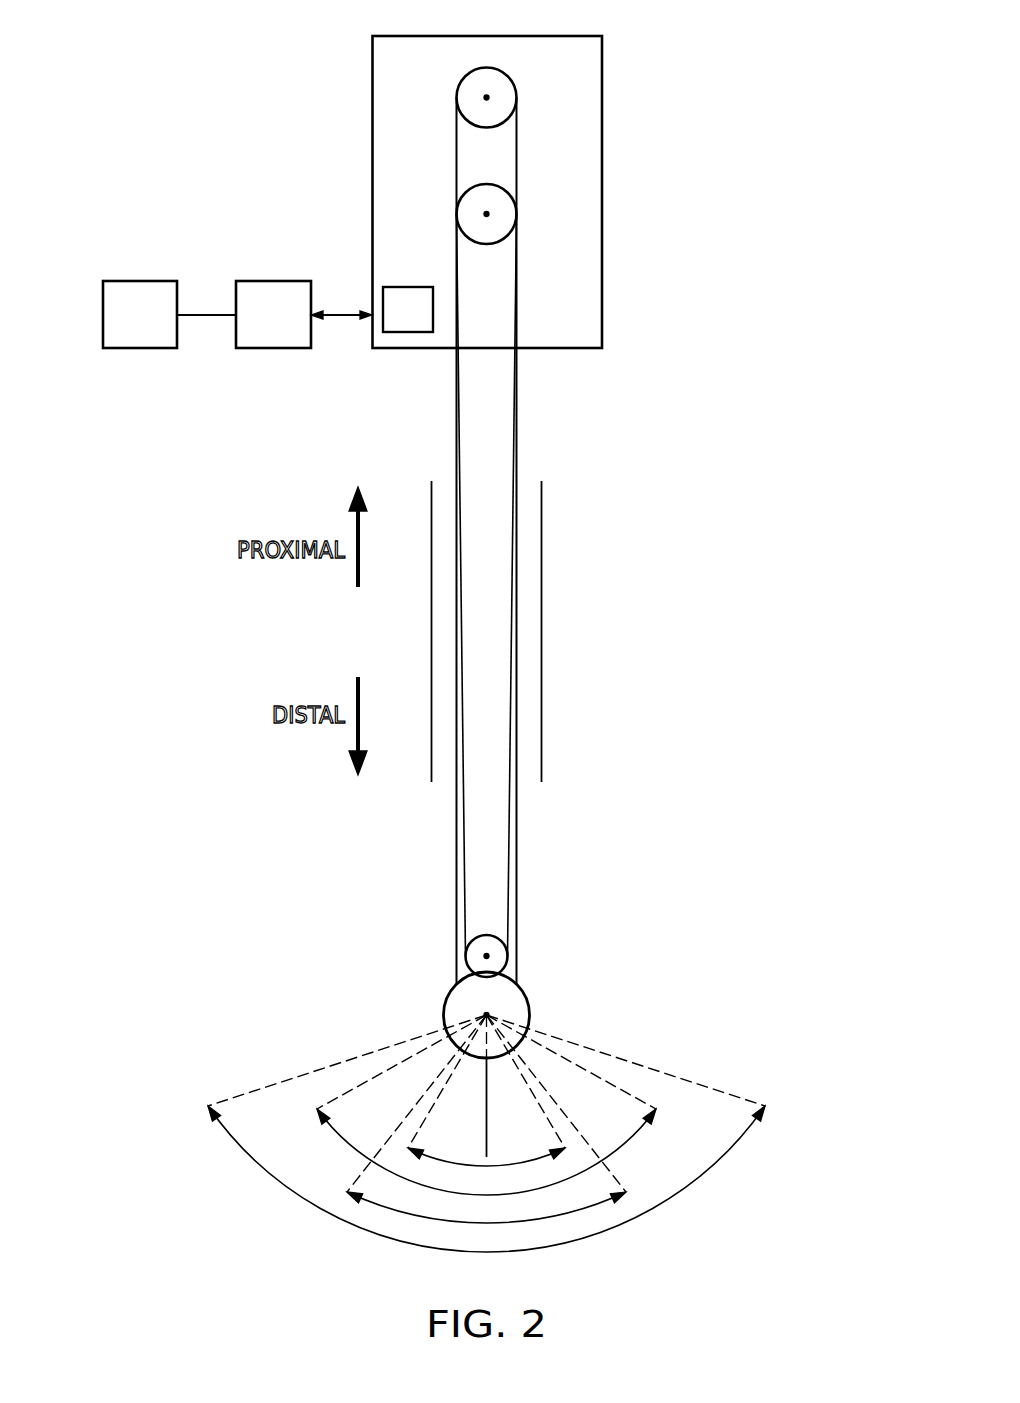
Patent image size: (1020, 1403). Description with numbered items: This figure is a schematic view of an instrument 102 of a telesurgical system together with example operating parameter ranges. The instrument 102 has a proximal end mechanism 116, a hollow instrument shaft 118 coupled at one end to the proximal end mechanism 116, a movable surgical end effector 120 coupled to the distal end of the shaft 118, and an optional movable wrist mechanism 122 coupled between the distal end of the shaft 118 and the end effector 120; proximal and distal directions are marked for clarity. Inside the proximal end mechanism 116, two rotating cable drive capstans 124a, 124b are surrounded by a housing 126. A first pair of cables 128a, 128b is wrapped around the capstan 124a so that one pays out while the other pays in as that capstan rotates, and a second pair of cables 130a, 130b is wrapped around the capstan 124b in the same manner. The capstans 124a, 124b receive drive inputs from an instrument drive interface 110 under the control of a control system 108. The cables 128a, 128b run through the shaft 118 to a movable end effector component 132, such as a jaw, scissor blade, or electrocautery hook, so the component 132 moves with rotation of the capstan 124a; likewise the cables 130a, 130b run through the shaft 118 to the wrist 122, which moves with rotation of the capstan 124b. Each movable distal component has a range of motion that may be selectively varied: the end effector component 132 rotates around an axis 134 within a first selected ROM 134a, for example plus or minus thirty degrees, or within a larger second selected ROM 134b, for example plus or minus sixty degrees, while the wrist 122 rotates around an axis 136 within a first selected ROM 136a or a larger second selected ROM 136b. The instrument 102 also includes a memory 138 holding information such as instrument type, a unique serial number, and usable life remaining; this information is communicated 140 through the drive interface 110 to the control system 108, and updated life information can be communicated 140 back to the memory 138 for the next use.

The instrument 102 is at (186, 68).
The control system 108 is at (140, 281).
The instrument drive interface 110 is at (273, 281).
The proximal end mechanism 116 is at (368, 137).
The instrument shaft 118 is at (542, 632).
The surgical end effector 120 is at (628, 944).
The wrist mechanism 122 is at (469, 956).
The cable drive capstan 124a is at (507, 97).
The cable drive capstan 124b is at (507, 214).
The housing 126 is at (593, 291).
The cable 128a is at (454, 827).
The cable 128b is at (518, 803).
The cable 130a is at (464, 884).
The cable 130b is at (509, 857).
The end effector component 132 is at (450, 1003).
The axis 134 is at (492, 1013).
The first selected ROM 134a is at (510, 1163).
The second selected ROM 134b is at (347, 1147).
The axis 136 is at (500, 958).
The first selected ROM 136a is at (403, 1213).
The second selected ROM 136b is at (690, 1185).
The memory 138 is at (405, 333).
The communication 140 is at (349, 318).